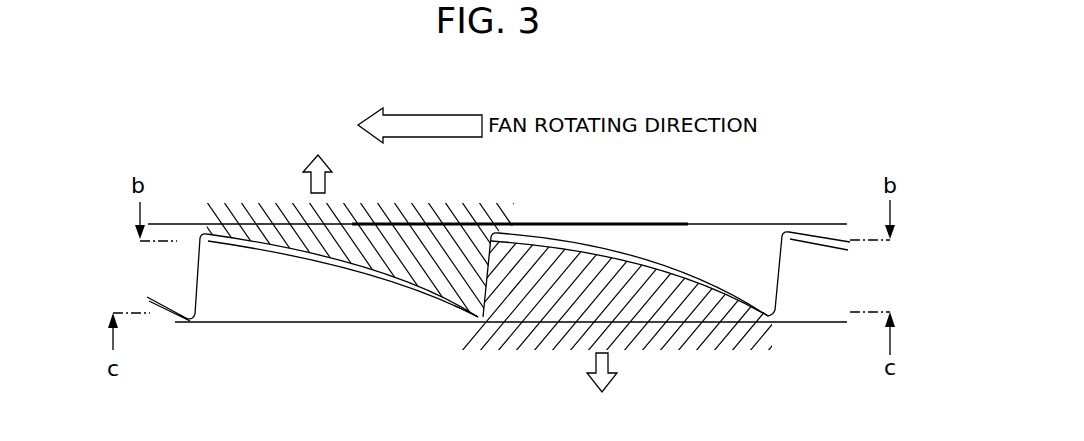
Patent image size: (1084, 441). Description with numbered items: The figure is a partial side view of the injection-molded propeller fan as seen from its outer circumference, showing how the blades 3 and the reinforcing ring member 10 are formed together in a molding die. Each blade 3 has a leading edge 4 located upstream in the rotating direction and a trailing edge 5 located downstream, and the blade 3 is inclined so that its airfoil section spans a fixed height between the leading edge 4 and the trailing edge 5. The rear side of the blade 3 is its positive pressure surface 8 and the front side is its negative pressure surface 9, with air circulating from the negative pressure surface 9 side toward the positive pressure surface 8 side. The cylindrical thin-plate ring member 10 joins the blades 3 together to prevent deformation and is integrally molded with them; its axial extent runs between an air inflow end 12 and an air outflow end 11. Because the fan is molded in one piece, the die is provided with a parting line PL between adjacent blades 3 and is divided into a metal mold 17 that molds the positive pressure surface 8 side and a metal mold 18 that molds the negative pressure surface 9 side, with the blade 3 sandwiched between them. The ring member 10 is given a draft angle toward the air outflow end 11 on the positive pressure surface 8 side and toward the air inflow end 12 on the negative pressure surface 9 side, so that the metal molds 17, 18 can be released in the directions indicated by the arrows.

The blade 3 is at (625, 280).
The leading edge 4 is at (202, 236).
The trailing edge 5 is at (478, 318).
The positive pressure surface 8 is at (668, 283).
The negative pressure surface 9 is at (710, 287).
The reinforcing ring member 10 is at (712, 232).
The air outflow end 11 is at (310, 322).
The air inflow end 12 is at (273, 223).
The metal mold 17 is at (537, 305).
The metal mold 18 is at (408, 230).
The parting line PL is at (490, 270).